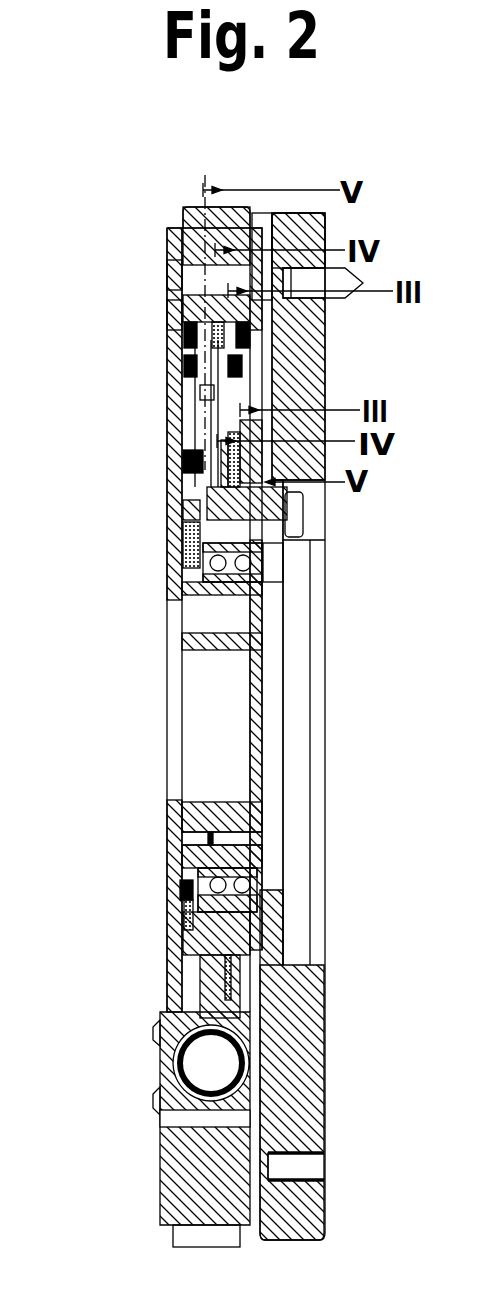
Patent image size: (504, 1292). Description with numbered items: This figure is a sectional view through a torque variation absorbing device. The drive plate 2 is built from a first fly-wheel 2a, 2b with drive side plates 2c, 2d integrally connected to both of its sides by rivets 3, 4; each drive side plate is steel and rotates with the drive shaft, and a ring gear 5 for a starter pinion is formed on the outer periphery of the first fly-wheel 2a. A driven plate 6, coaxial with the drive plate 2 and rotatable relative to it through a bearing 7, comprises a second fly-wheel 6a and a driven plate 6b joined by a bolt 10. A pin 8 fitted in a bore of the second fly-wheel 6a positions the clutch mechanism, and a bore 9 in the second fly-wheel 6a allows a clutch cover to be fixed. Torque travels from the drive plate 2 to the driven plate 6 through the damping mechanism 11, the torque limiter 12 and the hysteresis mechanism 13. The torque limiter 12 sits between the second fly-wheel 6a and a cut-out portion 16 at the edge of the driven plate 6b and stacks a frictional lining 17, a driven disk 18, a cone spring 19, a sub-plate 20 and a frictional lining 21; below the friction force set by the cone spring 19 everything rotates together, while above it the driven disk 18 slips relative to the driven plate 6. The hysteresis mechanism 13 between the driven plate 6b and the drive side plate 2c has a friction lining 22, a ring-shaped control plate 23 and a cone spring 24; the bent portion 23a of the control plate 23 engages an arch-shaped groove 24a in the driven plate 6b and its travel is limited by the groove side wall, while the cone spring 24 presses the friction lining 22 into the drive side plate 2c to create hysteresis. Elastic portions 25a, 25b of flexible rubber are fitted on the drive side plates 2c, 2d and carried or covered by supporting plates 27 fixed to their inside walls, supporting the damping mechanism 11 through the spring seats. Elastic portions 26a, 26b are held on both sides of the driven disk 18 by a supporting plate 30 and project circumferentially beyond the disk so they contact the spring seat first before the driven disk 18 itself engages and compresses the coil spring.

The drive plate 2 is at (172, 580).
The first fly-wheel 2a is at (132, 283).
The first fly-wheel 2b is at (169, 800).
The drive side plate 2c is at (184, 186).
The drive side plate 2d is at (344, 241).
The rivet 3 is at (132, 240).
The rivet 4 is at (169, 827).
The ring gear 5 is at (184, 296).
The driven plate 6 is at (373, 726).
The second fly-wheel 6a is at (354, 240).
The driven plate 6b is at (333, 1065).
The bearing 7 is at (280, 590).
The pin 8 is at (376, 277).
The bore 9 is at (328, 1176).
The bolt 10 is at (361, 527).
The damping mechanism 11 is at (160, 1129).
The torque limiter 12 is at (320, 504).
The hysteresis mechanism 13 is at (137, 450).
The cut-out portion 16 is at (158, 985).
The frictional lining 17 is at (129, 549).
The driven disk 18 is at (345, 432).
The cone spring 19 is at (143, 447).
The sub-plate 20 is at (148, 459).
The frictional lining 21 is at (130, 487).
The friction lining 22 is at (135, 870).
The control plate 23 is at (167, 899).
The bent portion 23a is at (130, 580).
The cone spring 24 is at (163, 934).
The groove 24a is at (338, 569).
The elastic portion 25a is at (112, 303).
The elastic portion 25b is at (343, 334).
The elastic portion 26a is at (112, 357).
The elastic portion 26b is at (347, 380).
The supporting plate 27 is at (139, 323).
The supporting plate 30 is at (135, 394).